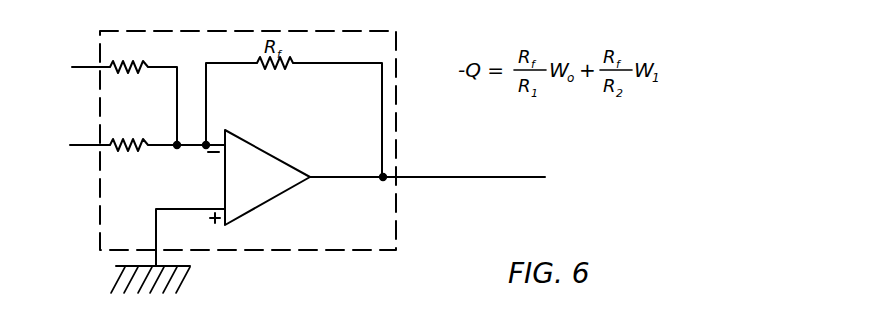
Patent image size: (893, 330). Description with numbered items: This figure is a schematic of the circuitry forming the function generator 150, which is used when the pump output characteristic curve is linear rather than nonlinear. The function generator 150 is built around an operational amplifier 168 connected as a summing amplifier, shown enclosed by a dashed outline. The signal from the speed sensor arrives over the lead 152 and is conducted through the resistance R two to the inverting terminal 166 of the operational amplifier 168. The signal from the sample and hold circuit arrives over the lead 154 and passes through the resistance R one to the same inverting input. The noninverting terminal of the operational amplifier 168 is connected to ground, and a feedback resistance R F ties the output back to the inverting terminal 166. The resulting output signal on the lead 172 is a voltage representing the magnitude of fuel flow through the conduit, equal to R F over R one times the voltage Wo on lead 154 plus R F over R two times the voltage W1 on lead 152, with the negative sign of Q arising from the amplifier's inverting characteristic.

The function generator 150 is at (399, 101).
The lead 152 is at (92, 146).
The lead 154 is at (100, 63).
The inverting terminal 166 is at (230, 148).
The operational amplifier 168 is at (260, 185).
The lead 172 is at (478, 176).